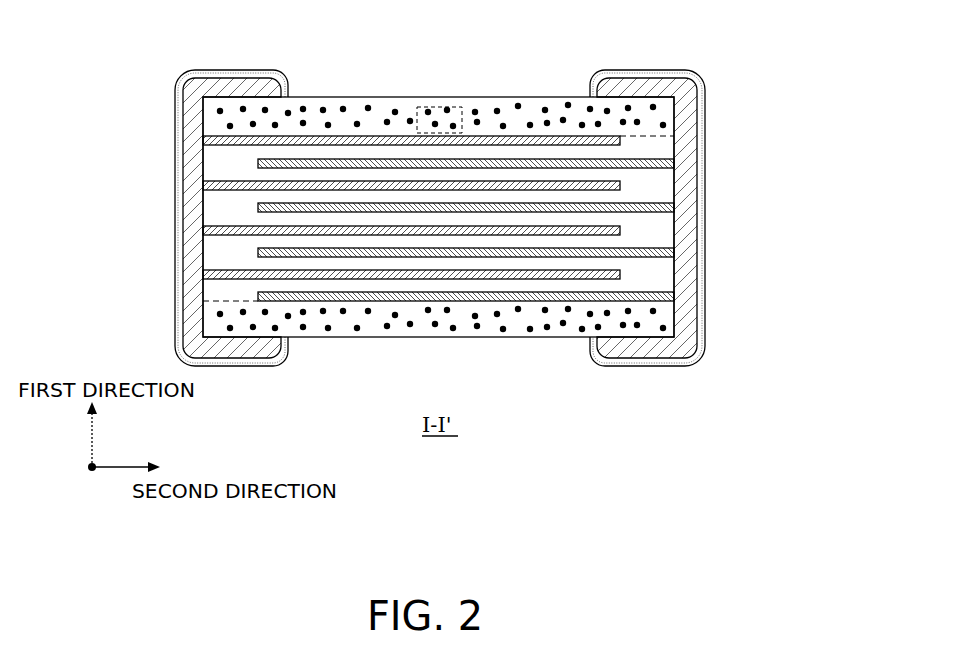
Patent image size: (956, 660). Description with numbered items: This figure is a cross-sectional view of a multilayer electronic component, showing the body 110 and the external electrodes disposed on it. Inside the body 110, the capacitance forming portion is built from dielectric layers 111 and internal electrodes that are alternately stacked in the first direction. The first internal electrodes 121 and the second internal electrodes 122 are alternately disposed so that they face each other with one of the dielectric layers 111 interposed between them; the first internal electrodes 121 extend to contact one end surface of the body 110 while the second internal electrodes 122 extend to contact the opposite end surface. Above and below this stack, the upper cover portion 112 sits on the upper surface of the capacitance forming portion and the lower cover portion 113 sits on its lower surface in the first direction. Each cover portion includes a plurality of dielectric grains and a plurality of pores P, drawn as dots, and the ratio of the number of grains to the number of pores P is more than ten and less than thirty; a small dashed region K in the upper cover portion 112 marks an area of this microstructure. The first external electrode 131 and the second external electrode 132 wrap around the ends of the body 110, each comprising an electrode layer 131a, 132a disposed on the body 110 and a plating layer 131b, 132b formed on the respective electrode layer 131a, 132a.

The body 110 is at (312, 97).
The dielectric layer 111 is at (347, 175).
The upper cover portion 112 is at (386, 104).
The lower cover portion 113 is at (440, 335).
The first internal electrode 121 is at (493, 140).
The second internal electrode 122 is at (525, 163).
The region K is at (440, 100).
The pore P is at (568, 100).
The first external electrode 131 is at (159, 218).
The electrode layer 131a is at (197, 147).
The plating layer 131b is at (185, 190).
The second external electrode 132 is at (721, 218).
The electrode layer 132a is at (684, 147).
The plating layer 132b is at (700, 190).